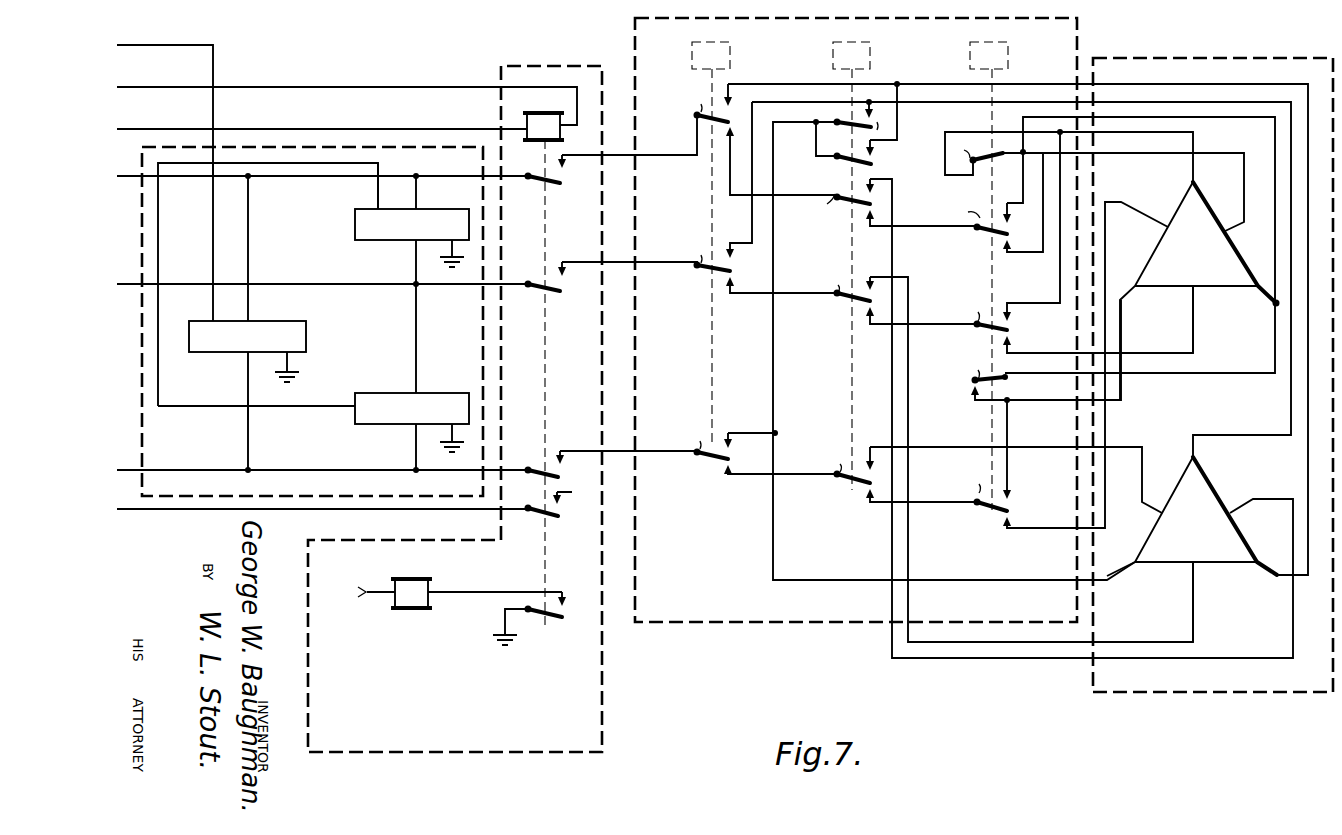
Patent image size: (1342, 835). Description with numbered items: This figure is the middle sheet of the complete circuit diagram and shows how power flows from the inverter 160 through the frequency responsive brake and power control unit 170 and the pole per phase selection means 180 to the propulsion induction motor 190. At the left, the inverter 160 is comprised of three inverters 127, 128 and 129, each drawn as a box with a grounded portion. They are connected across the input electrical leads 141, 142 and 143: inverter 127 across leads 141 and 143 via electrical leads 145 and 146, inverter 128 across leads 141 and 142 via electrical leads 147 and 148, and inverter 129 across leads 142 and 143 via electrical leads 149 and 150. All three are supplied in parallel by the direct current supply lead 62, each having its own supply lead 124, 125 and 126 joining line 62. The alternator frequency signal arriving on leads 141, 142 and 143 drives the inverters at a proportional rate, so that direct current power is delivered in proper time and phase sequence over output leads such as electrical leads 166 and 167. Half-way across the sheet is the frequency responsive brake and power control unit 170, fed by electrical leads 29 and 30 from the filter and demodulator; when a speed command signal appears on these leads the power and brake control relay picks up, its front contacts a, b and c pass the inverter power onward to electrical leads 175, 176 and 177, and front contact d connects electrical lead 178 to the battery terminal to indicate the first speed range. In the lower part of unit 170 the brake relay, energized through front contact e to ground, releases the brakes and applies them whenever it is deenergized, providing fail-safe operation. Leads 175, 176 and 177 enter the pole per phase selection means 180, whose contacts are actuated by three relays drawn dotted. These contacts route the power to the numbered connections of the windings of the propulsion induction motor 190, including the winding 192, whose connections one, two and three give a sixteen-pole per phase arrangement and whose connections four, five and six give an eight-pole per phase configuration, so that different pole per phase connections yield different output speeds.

The direct current supply lead 62 is at (213, 47).
The electrical lead 29 is at (160, 92).
The electrical lead 30 is at (168, 134).
The inverter 160 is at (323, 146).
The supply lead 124 is at (158, 226).
The supply lead 125 is at (213, 205).
The supply lead 126 is at (374, 198).
The inverter 127 is at (204, 326).
The inverter 128 is at (351, 218).
The inverter 129 is at (404, 393).
The input electrical lead 141 is at (322, 190).
The input electrical lead 142 is at (322, 298).
The input electrical lead 143 is at (322, 487).
The electrical lead 145 is at (250, 244).
The electrical lead 146 is at (248, 378).
The electrical lead 147 is at (416, 192).
The electrical lead 148 is at (416, 262).
The electrical lead 149 is at (416, 336).
The electrical lead 150 is at (416, 446).
The electrical lead 166 is at (438, 297).
The electrical lead 167 is at (422, 474).
The frequency responsive brake and power control unit 170 is at (583, 66).
The electrical lead 175 is at (614, 155).
The electrical lead 176 is at (614, 262).
The electrical lead 177 is at (616, 451).
The electrical lead 178 is at (322, 512).
The pole per phase selection means 180 is at (635, 22).
The propulsion induction motor 190 is at (1228, 56).
The winding 192 is at (1202, 533).